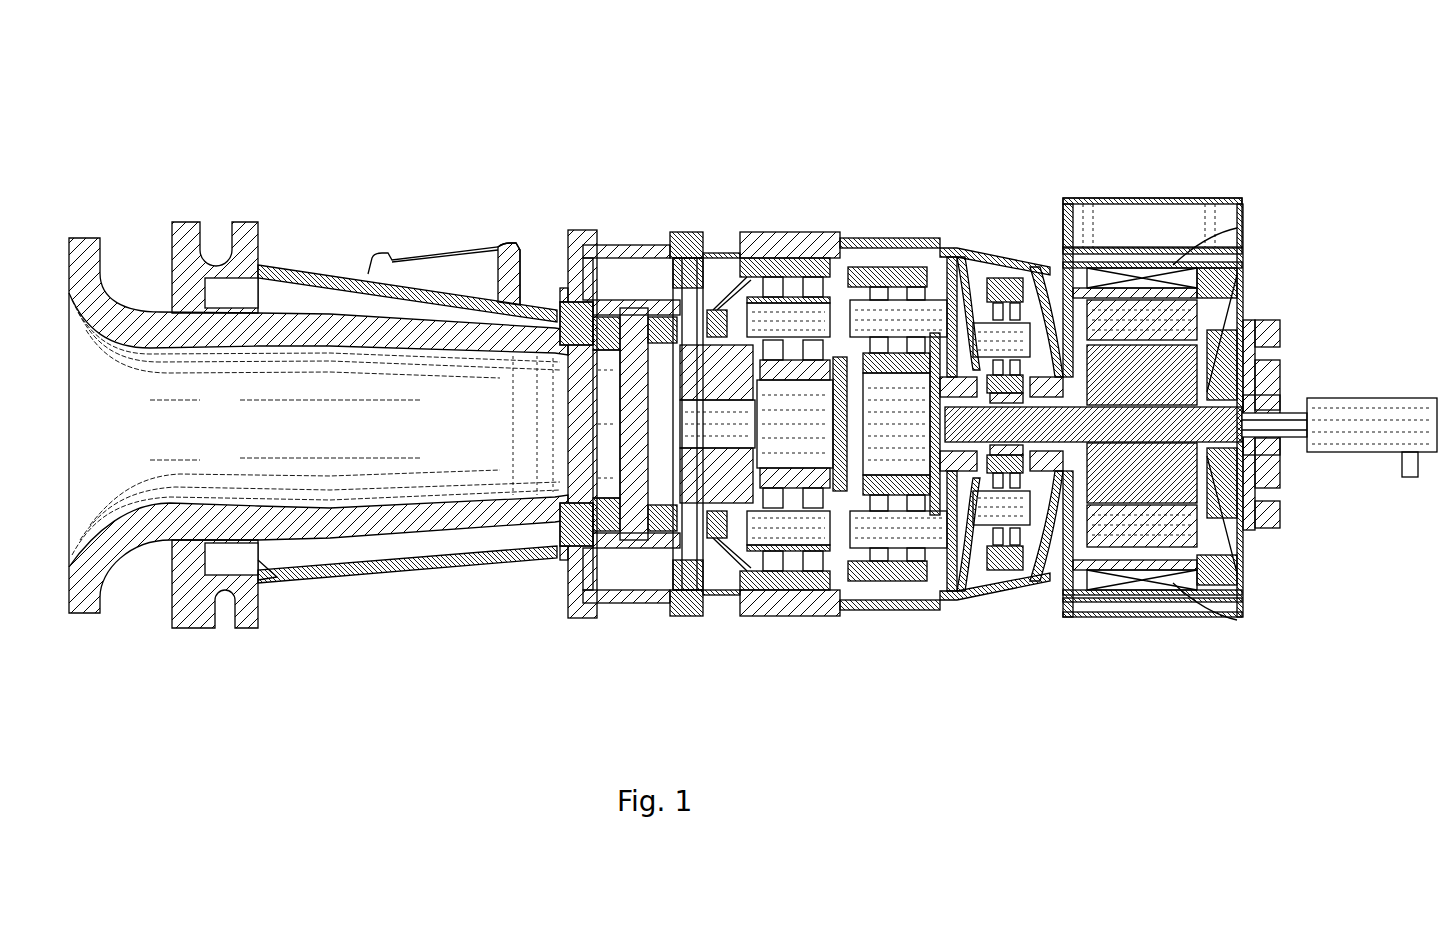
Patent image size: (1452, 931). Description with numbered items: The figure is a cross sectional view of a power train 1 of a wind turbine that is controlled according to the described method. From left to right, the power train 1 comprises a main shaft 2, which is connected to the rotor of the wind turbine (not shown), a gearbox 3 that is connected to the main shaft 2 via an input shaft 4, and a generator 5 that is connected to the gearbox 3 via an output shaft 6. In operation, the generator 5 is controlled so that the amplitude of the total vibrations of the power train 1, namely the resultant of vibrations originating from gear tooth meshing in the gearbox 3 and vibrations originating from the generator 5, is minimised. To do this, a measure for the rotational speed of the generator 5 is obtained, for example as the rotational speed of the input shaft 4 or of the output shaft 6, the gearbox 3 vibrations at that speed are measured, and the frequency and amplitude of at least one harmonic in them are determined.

The power train 1 is at (1276, 120).
The main shaft 2 is at (85, 230).
The gearbox 3 is at (787, 224).
The input shaft 4 is at (700, 310).
The generator 5 is at (1160, 198).
The output shaft 6 is at (1004, 450).